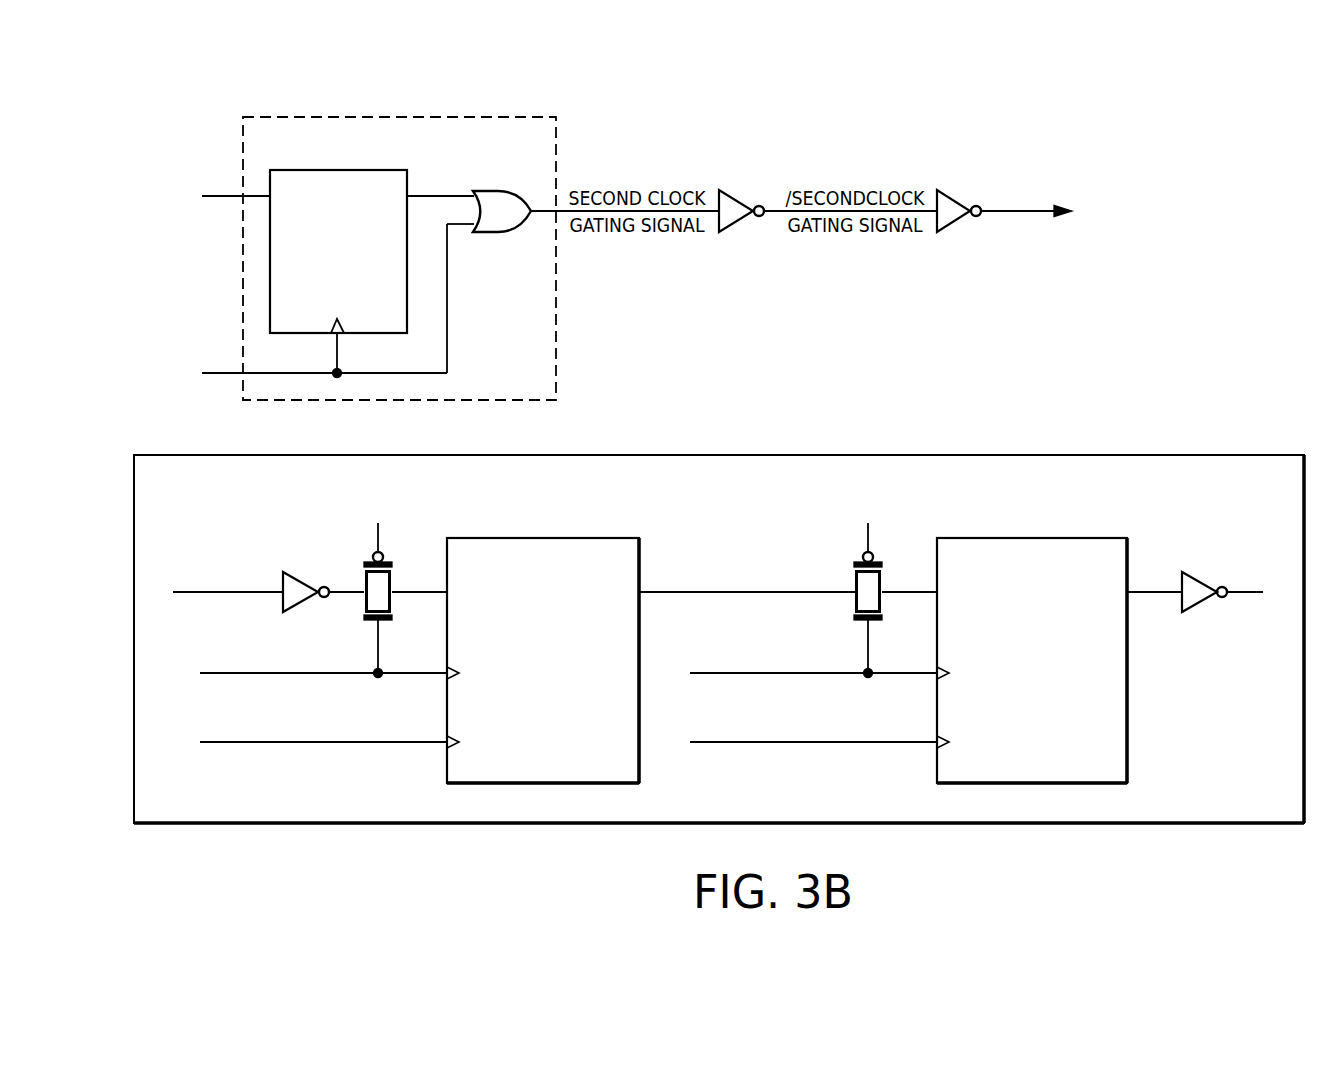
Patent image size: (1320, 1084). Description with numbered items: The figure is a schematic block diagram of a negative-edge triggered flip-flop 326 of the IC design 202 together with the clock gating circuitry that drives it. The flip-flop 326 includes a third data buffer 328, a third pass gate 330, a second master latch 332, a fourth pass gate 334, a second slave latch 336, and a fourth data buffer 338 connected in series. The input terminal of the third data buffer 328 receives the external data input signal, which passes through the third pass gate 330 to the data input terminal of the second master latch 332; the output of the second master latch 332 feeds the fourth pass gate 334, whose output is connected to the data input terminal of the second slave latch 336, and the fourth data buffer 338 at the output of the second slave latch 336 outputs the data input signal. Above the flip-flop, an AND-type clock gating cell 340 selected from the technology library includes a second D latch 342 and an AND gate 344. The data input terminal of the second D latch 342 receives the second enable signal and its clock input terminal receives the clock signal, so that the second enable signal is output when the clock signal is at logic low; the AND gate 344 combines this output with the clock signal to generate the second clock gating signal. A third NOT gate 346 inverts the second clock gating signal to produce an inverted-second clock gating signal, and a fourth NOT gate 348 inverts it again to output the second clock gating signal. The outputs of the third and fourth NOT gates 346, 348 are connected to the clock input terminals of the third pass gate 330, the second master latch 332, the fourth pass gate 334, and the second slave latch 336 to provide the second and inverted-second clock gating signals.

The IC design 202 is at (1194, 152).
The negative-edge triggered flip-flop 326 is at (1148, 455).
The third data buffer 328 is at (300, 582).
The third pass gate 330 is at (392, 617).
The second master latch 332 is at (540, 538).
The fourth pass gate 334 is at (882, 617).
The second slave latch 336 is at (1030, 538).
The fourth data buffer 338 is at (1198, 575).
The AND-type clock gating cell 340 is at (409, 117).
The second D latch 342 is at (337, 170).
The AND gate 344 is at (505, 190).
The third NOT gate 346 is at (736, 190).
The fourth NOT gate 348 is at (954, 190).